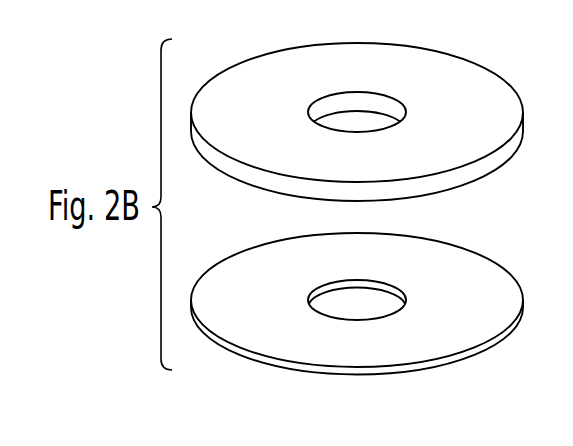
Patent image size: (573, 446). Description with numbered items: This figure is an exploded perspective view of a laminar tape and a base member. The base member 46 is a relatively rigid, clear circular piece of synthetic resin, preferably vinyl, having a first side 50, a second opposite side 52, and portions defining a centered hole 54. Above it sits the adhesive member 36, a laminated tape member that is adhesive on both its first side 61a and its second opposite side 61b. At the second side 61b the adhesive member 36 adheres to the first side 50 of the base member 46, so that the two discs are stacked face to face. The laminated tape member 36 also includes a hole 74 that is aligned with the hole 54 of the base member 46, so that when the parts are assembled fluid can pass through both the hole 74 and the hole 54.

The adhesive member 36 is at (357, 141).
The first side 61a is at (494, 78).
The second opposite side 61b is at (476, 190).
The hole 74 is at (373, 100).
The base member 46 is at (364, 325).
The first side 50 is at (504, 268).
The second opposite side 52 is at (467, 378).
The hole 54 is at (325, 290).